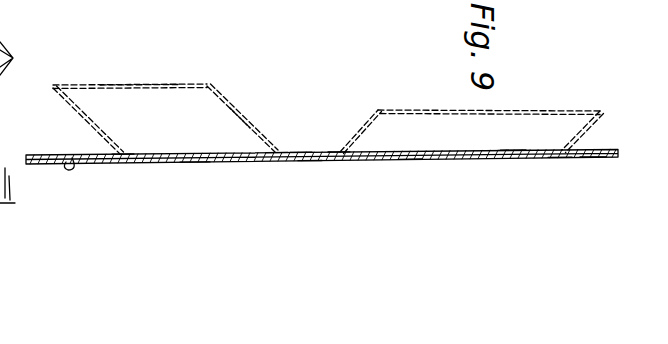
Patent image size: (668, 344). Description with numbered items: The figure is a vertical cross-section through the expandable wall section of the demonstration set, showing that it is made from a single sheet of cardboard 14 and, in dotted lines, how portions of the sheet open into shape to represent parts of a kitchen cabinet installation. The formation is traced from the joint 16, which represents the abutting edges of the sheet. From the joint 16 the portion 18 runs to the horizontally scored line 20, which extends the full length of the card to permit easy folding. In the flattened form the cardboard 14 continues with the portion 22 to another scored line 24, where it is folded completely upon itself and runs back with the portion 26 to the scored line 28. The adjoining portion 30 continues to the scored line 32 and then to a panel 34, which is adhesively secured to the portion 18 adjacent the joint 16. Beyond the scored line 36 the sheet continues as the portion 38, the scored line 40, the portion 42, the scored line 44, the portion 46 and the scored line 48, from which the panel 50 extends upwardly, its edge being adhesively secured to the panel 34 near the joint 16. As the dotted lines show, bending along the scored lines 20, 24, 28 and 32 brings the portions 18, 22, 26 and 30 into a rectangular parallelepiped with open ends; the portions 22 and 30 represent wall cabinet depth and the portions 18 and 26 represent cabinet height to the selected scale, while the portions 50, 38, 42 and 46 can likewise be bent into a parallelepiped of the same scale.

The sheet of cardboard 14 is at (460, 158).
The joint 16 is at (310, 159).
The portion 18 is at (410, 157).
The scored line 20 is at (560, 157).
The portion 22 is at (586, 128).
The scored line 24 is at (602, 111).
The portion 26 is at (513, 150).
The scored line 28 is at (377, 110).
The portion 30 is at (357, 132).
The scored line 32 is at (338, 150).
The panel 34 is at (300, 152).
The scored line 36 is at (277, 152).
The portion 38 is at (243, 119).
The scored line 40 is at (207, 85).
The portion 42 is at (153, 85).
The scored line 44 is at (53, 88).
The portion 46 is at (88, 124).
The scored line 48 is at (123, 155).
The panel 50 is at (190, 163).